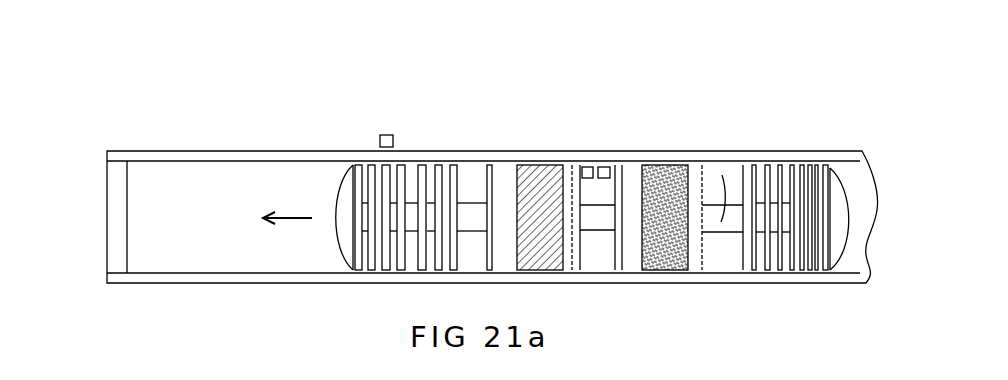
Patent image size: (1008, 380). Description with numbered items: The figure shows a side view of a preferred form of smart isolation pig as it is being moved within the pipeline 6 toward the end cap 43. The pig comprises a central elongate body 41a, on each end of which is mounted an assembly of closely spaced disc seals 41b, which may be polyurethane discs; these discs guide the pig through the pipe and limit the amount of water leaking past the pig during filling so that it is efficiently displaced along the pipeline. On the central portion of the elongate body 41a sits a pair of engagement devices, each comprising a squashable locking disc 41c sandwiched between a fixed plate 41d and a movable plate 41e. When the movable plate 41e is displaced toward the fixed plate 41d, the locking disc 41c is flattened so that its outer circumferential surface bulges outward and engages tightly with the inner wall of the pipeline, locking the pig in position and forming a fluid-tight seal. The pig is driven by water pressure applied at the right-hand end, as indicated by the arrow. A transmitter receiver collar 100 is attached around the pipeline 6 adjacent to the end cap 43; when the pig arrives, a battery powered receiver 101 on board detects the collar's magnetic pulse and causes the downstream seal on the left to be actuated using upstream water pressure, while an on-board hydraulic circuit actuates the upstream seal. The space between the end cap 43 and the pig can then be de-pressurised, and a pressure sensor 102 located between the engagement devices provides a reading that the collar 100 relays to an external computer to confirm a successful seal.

The pipeline 6 is at (252, 151).
The end cap 43 is at (113, 232).
The transmitter receiver collar 100 is at (383, 135).
The battery powered receiver 101 is at (587, 150).
The pressure sensor 102 is at (612, 150).
The central elongate body 41a is at (830, 128).
The disc seals 41b is at (790, 148).
The locking disc 41c is at (537, 150).
The fixed plate 41d is at (503, 150).
The movable plate 41e is at (572, 150).